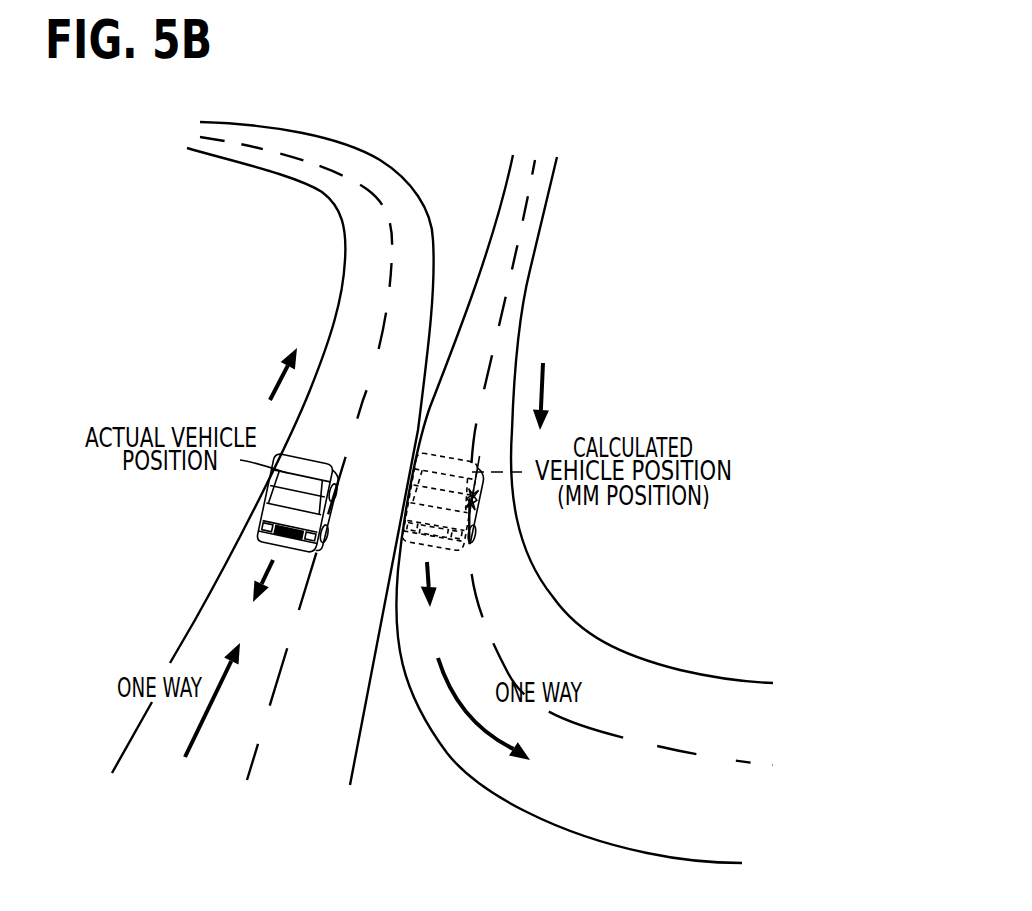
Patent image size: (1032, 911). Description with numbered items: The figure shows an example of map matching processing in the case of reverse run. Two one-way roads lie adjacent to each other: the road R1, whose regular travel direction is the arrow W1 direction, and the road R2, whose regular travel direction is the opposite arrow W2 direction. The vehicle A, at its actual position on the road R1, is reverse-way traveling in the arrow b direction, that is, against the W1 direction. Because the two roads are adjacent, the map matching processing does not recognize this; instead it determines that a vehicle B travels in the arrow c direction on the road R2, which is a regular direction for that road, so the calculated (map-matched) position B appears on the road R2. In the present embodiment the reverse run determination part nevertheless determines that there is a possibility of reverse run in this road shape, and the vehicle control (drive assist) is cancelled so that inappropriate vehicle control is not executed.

The one-way road R1 is at (347, 310).
The one-way road R2 is at (513, 312).
The arrow W1 is at (267, 374).
The arrow W2 is at (556, 396).
The vehicle A is at (277, 480).
The vehicle B is at (472, 500).
The arrow b is at (255, 593).
The arrow c is at (433, 597).